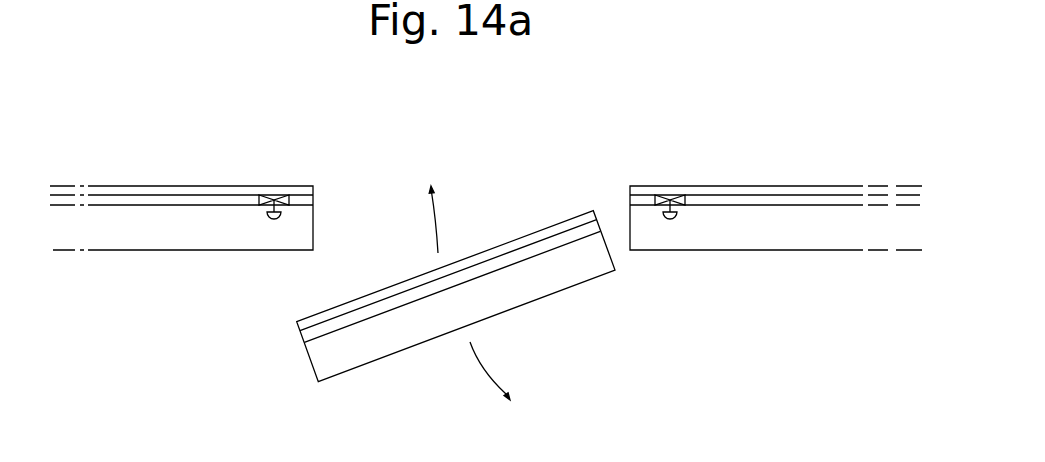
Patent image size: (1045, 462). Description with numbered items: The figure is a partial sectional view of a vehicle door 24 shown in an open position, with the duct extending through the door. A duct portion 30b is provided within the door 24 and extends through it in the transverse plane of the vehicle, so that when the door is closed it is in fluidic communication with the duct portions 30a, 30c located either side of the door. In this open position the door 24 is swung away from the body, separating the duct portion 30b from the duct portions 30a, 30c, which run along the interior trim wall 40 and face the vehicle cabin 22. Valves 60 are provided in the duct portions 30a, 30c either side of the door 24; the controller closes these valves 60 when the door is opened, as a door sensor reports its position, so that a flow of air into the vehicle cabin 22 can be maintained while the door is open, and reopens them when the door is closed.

The duct portion 30a is at (147, 200).
The interior trim wall 40 is at (212, 186).
The valve 60 is at (268, 198).
The vehicle cabin 22 is at (472, 195).
The duct portion 30c is at (773, 200).
The duct portion 30b is at (358, 314).
The door 24 is at (538, 273).